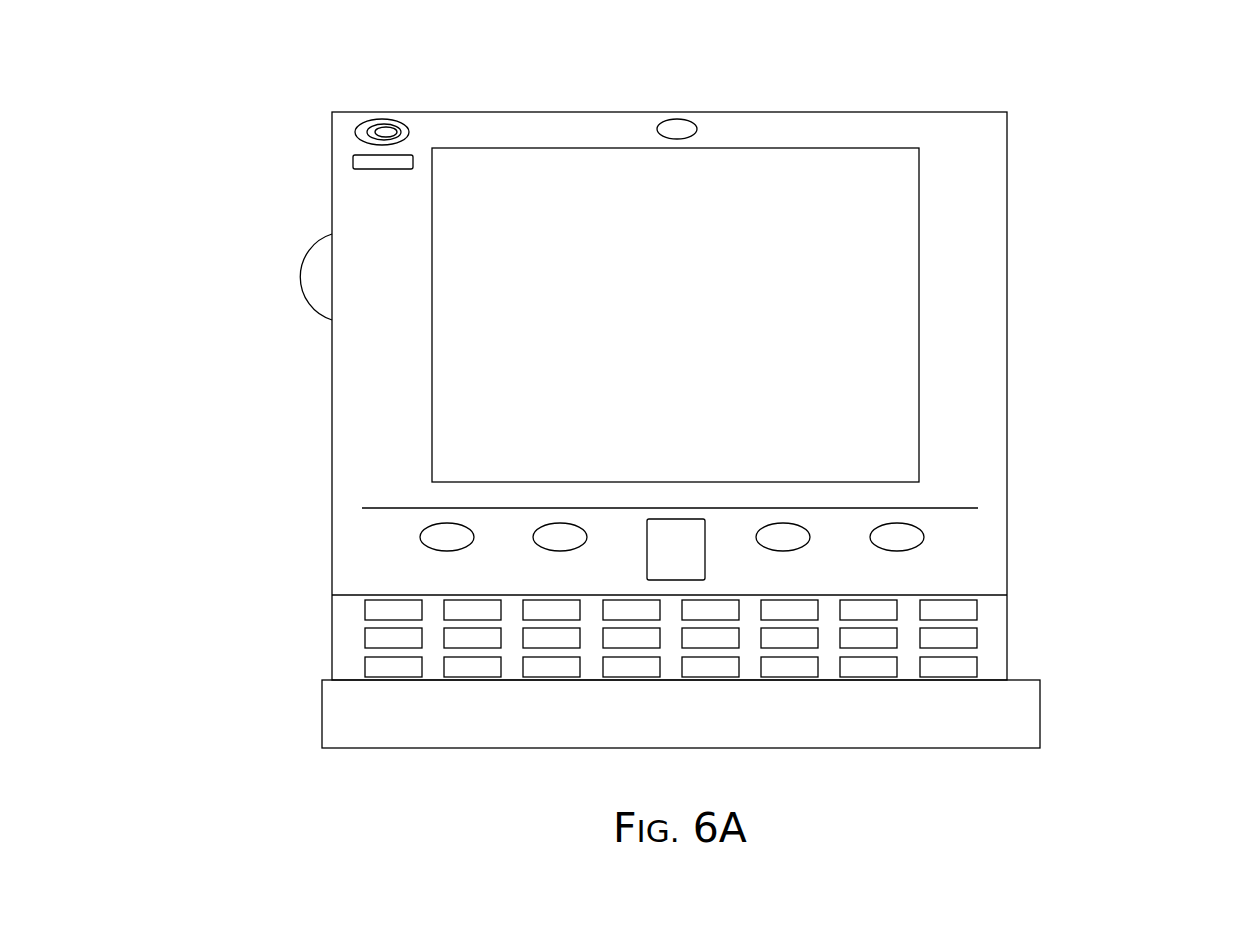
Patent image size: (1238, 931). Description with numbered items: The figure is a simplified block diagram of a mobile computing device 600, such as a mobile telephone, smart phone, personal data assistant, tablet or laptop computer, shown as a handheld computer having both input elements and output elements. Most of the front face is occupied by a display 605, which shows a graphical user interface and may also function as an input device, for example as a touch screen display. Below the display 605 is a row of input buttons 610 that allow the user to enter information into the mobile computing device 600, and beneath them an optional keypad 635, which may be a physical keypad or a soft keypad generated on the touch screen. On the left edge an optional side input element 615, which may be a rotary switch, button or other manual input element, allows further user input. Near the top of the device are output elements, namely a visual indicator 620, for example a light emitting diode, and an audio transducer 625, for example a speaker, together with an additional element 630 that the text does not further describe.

The mobile computing device 600 is at (992, 125).
The display 605 is at (582, 423).
The input buttons 610 is at (670, 555).
The side input element 615 is at (318, 275).
The visual indicator 620 is at (353, 162).
The audio transducer 625 is at (355, 132).
The sensor 630 is at (700, 128).
The keypad 635 is at (345, 670).